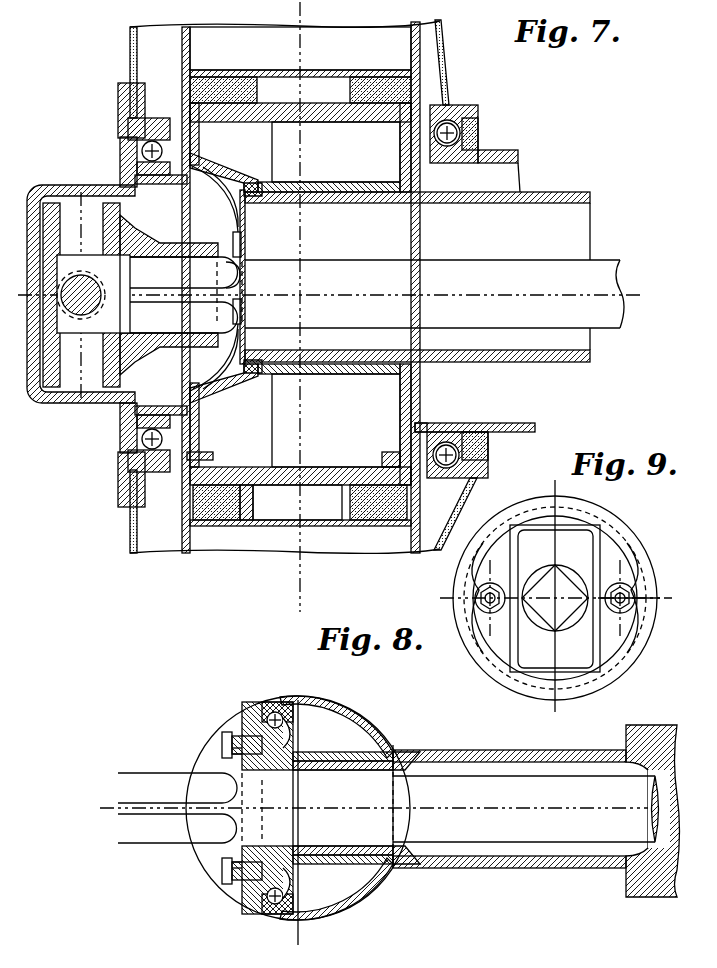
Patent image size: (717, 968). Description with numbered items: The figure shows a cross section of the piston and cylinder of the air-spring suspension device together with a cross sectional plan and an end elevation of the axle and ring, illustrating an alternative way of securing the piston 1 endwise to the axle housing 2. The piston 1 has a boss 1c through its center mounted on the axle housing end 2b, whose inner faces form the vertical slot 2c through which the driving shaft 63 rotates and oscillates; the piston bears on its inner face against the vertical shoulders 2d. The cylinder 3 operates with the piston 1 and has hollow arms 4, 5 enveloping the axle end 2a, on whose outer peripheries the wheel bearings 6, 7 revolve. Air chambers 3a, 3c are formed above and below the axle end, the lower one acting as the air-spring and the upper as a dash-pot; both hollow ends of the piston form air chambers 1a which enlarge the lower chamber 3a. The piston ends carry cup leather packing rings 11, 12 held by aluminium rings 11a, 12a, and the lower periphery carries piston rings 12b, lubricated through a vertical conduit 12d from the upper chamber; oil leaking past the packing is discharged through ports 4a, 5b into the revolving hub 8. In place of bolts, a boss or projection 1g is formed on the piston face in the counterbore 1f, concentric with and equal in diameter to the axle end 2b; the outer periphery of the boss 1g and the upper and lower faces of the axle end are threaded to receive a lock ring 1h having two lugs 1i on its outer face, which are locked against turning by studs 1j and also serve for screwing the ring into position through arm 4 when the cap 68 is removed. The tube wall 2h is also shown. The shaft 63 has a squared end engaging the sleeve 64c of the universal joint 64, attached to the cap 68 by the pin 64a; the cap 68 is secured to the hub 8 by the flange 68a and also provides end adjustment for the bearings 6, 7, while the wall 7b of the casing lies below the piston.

In FIG. 7, the piston 1 is at (200, 127).
In FIG. 8, the piston 1 is at (372, 716).
In FIG. 7, the air chambers 1a is at (336, 294).
In FIG. 8, the air chambers 1a is at (343, 830).
In FIG. 7, the boss 1c is at (348, 184).
In FIG. 8, the boss 1c is at (345, 754).
In FIG. 7, the front face 1f is at (270, 378).
In FIG. 8, the front face 1f is at (272, 703).
In FIG. 8, the boss or projection 1g is at (222, 734).
In FIG. 7, the lock ring 1h is at (262, 183).
In FIG. 9, the lock ring 1h is at (590, 508).
In FIG. 8, the lock ring 1h is at (248, 708).
In FIG. 7, the lugs 1i is at (246, 241).
In FIG. 9, the lugs 1i is at (640, 618).
In FIG. 8, the lugs 1i is at (236, 755).
In FIG. 7, the studs 1j is at (232, 247).
In FIG. 9, the studs 1j is at (630, 592).
In FIG. 8, the studs 1j is at (236, 872).
In FIG. 8, the axle housing 2 is at (626, 728).
In FIG. 7, the axle end 2a is at (500, 200).
In FIG. 7, the axle housing end 2b is at (336, 352).
In FIG. 9, the axle housing end 2b is at (514, 548).
In FIG. 8, the axle housing end 2b is at (306, 752).
In FIG. 9, the vertical slot 2c is at (555, 599).
In FIG. 8, the vertical shoulders 2d is at (390, 752).
In FIG. 8, the tube wall 2h is at (524, 751).
In FIG. 7, the cylinder 3 is at (183, 50).
In FIG. 7, the lower air chamber 3a is at (287, 518).
In FIG. 7, the upper air chamber 3c is at (300, 48).
In FIG. 7, the hollow arm 4 is at (155, 179).
In FIG. 7, the port 4a is at (172, 407).
In FIG. 7, the hollow arm 5 is at (455, 163).
In FIG. 7, the port 5b is at (423, 424).
In FIG. 7, the bearing 6 is at (128, 147).
In FIG. 7, the bearing 7 is at (478, 124).
In FIG. 7, the casing wall 7b is at (253, 494).
In FIG. 7, the hub 8 is at (446, 58).
In FIG. 7, the cup leather packing ring 11 is at (222, 63).
In FIG. 7, the aluminium ring or washer 11a is at (388, 77).
In FIG. 7, the cup leather packing ring 12 is at (200, 522).
In FIG. 7, the aluminium ring or washer 12a is at (374, 521).
In FIG. 7, the piston ring 12b is at (200, 452).
In FIG. 8, the vertical conduit 12d is at (274, 712).
In FIG. 7, the driving shaft 63 is at (434, 276).
In FIG. 9, the driving shaft 63 is at (555, 599).
In FIG. 8, the driving shaft 63 is at (526, 809).
In FIG. 7, the universal joint 64 is at (145, 354).
In FIG. 7, the pin 64a is at (81, 276).
In FIG. 7, the sleeve 64c is at (188, 325).
In FIG. 8, the sleeve 64c is at (177, 808).
In FIG. 7, the cap 68 is at (58, 402).
In FIG. 7, the flange 68a is at (119, 112).